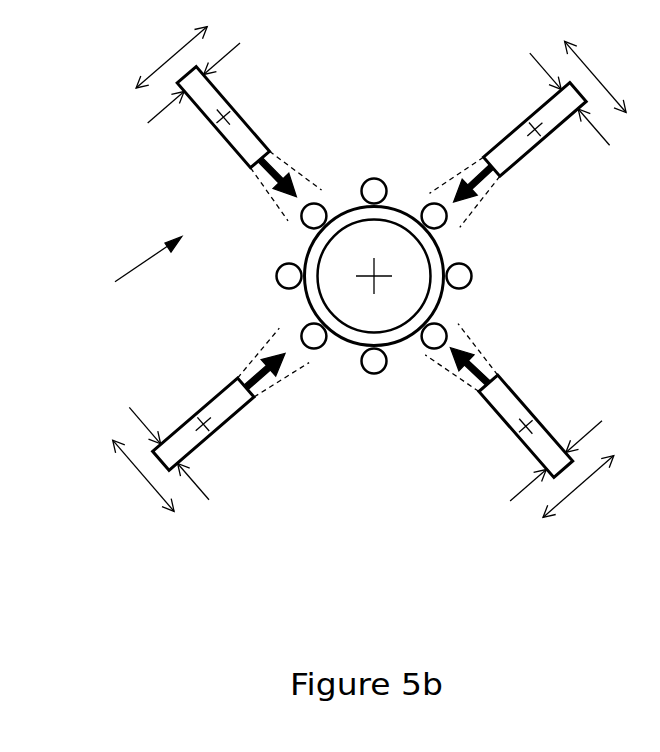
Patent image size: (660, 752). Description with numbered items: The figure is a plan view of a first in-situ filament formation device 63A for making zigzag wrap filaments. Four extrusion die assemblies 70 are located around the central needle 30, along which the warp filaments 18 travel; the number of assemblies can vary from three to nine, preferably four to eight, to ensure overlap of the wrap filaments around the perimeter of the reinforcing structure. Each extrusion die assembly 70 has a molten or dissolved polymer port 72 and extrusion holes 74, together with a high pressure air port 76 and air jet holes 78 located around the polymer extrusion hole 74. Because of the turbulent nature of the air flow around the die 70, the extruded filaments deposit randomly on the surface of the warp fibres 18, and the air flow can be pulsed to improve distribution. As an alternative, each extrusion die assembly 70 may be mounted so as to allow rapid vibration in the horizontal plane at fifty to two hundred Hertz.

The needle 30 is at (437, 255).
The warp filaments 18 is at (462, 278).
The extrusion die assembly 70 is at (242, 138).
The air jet holes 78 is at (238, 378).
The extrusion holes 74 is at (477, 387).
The port 72 is at (593, 428).
The high pressure air port 76 is at (525, 485).
The in-situ filament formation device 63A is at (125, 280).